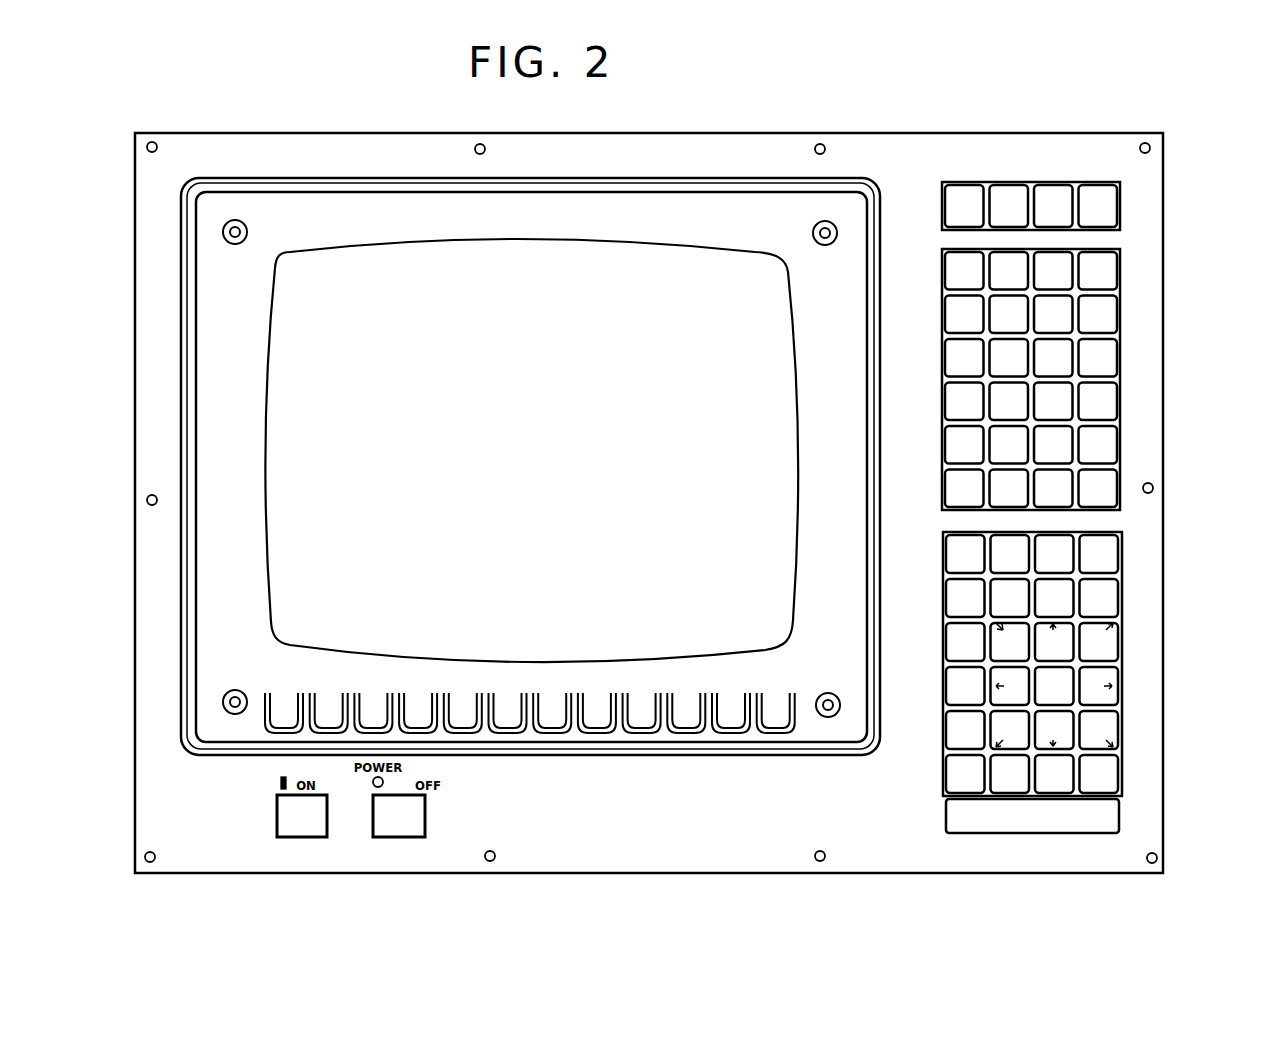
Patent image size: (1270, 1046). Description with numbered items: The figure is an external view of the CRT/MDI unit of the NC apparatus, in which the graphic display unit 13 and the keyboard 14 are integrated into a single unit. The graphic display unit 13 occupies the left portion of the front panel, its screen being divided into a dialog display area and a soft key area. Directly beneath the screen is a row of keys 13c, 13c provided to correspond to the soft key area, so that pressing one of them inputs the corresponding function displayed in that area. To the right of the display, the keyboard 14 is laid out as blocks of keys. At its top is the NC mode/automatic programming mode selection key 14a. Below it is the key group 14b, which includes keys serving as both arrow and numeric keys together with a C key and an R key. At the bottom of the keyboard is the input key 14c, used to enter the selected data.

The graphic display unit 13 is at (285, 620).
The keys 13c is at (278, 715).
The keyboard 14 is at (1098, 452).
The NC mode/automatic programming mode selection key 14a is at (1055, 182).
The key group 14b is at (1128, 643).
The input key 14c is at (1100, 808).